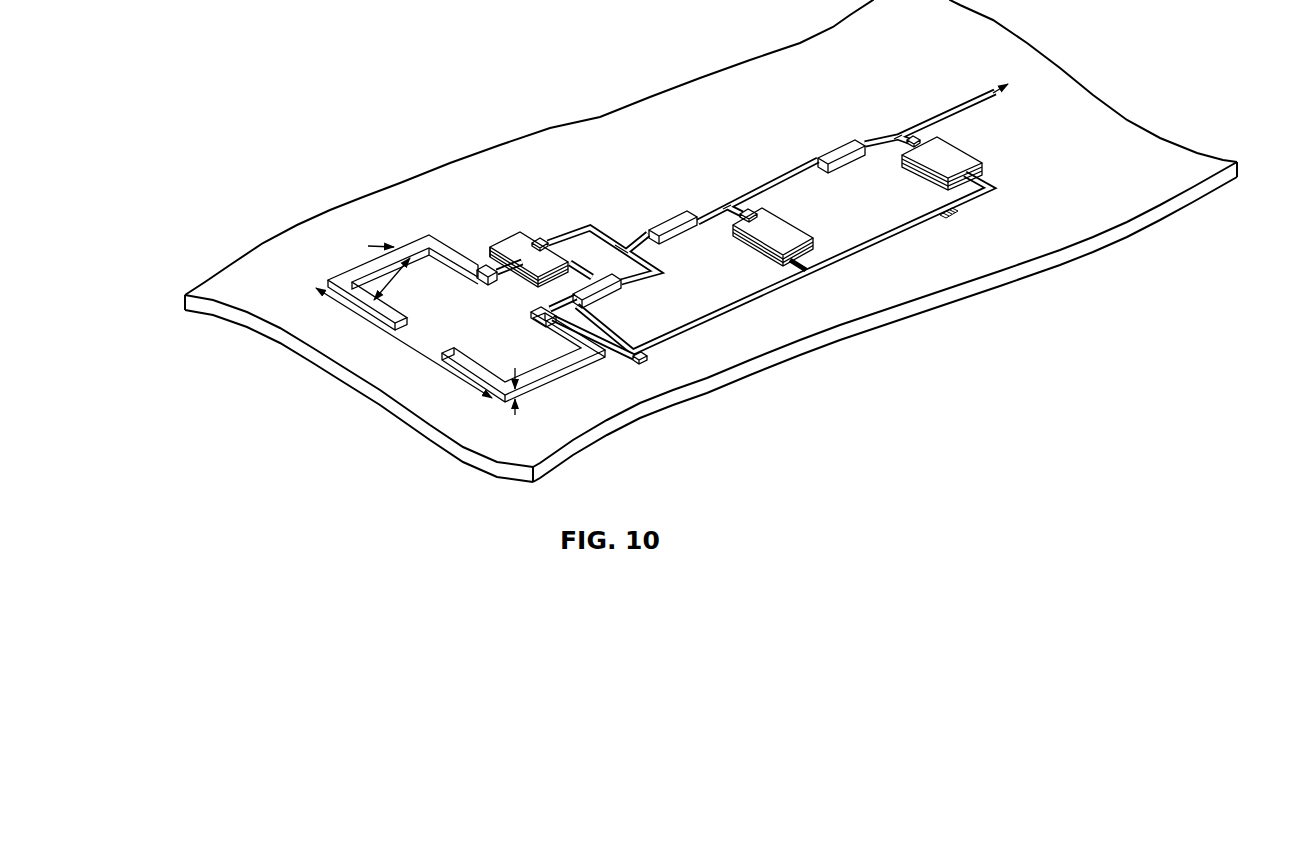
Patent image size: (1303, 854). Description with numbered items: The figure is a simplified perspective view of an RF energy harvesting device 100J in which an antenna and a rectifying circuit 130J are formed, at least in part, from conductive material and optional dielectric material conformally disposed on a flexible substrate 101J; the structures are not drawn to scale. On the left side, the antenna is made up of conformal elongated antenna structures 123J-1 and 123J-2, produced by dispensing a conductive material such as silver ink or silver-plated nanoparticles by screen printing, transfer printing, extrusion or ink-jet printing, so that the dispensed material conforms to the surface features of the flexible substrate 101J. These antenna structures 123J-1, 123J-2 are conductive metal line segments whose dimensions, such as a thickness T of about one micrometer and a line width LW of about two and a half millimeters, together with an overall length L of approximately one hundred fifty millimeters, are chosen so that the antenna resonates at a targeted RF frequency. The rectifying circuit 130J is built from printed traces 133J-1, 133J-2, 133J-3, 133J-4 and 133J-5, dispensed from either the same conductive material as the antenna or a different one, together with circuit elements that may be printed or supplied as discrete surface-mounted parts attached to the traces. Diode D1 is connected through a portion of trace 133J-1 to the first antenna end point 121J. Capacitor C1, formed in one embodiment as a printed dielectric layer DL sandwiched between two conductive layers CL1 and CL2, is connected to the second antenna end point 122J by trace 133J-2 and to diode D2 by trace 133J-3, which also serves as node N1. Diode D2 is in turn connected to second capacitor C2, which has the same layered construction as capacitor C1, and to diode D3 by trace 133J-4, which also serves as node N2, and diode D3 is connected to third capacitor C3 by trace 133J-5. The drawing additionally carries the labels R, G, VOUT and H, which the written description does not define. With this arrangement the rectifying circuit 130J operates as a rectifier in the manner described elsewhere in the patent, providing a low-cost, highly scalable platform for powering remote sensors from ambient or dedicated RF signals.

The RF energy harvesting device 100J is at (255, 172).
The flexible substrate 101J is at (508, 150).
The rectifying circuit 130J is at (574, 190).
The conformal elongated antenna structure 123J-1 is at (553, 369).
The conformal elongated antenna structure 123J-2 is at (405, 258).
The first antenna end point 121J is at (530, 318).
The second antenna end point 122J is at (483, 285).
The trace 133J-1 is at (603, 331).
The trace 133J-2 is at (570, 287).
The trace 133J-3 is at (573, 236).
The trace 133J-4 is at (721, 226).
The trace 133J-5 is at (925, 118).
The capacitor C1 is at (513, 236).
The second capacitor C2 is at (790, 231).
The third capacitor C3 is at (955, 157).
The diode D1 is at (589, 290).
The diode D2 is at (664, 226).
The diode D3 is at (832, 152).
The resistor R is at (942, 208).
The node N1 is at (621, 251).
The node N2 is at (717, 208).
The ground terminal G is at (650, 358).
The output voltage terminal VOUT is at (1018, 83).
The conductive layer CL1 is at (489, 254).
The conductive layer CL2 is at (492, 247).
The dielectric layer DL is at (486, 252).
The line width LW is at (366, 246).
The height of inductor opening H is at (392, 279).
The overall length L is at (392, 342).
The thickness T is at (515, 413).